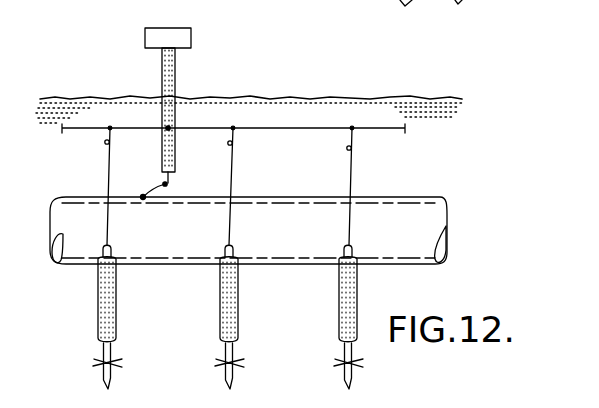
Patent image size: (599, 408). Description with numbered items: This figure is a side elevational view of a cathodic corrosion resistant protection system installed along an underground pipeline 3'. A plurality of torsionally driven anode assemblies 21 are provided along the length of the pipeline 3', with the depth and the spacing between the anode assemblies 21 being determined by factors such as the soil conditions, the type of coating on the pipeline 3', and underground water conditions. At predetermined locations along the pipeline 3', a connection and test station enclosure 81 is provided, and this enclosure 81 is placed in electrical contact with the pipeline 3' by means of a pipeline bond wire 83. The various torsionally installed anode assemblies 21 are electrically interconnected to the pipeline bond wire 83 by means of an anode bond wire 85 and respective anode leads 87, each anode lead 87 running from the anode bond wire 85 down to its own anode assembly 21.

The pipeline 3' is at (248, 249).
The torsionally driven anode assembly 21 is at (88, 321).
The connection and test station enclosure 81 is at (140, 55).
The pipeline bond wire 83 is at (143, 196).
The anode bond wire 85 is at (303, 128).
The anode lead 87 is at (108, 168).